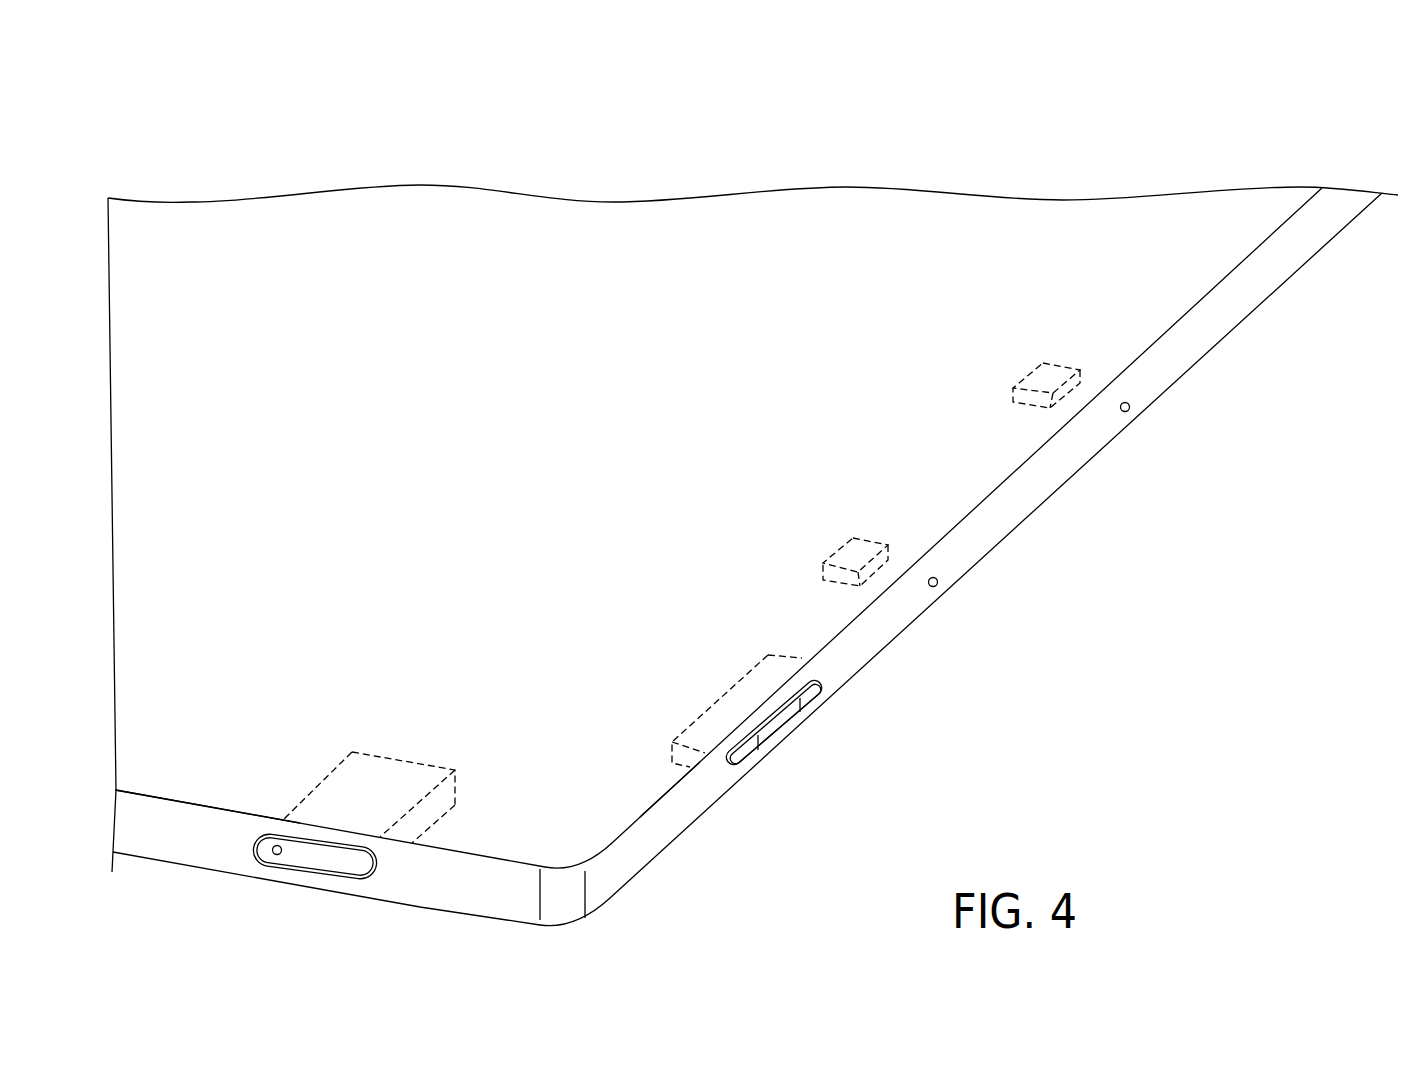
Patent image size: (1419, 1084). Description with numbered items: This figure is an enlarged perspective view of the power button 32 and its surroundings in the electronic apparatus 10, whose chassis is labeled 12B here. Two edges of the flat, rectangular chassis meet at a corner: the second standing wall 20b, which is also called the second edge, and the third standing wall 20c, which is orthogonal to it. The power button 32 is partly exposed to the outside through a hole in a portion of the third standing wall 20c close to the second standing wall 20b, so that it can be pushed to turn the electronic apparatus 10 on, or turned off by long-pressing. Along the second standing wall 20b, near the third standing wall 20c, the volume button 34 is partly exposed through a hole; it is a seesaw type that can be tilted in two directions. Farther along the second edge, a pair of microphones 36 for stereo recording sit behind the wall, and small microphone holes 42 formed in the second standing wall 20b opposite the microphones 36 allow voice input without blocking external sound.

The electronic apparatus 10 is at (1141, 133).
The housing 12B is at (753, 555).
The second standing wall 20b is at (663, 822).
The third standing wall 20c is at (185, 818).
The power button 32 is at (320, 863).
The volume button 34 is at (782, 717).
The microphones 36 is at (883, 528).
The microphone holes 42 is at (938, 582).